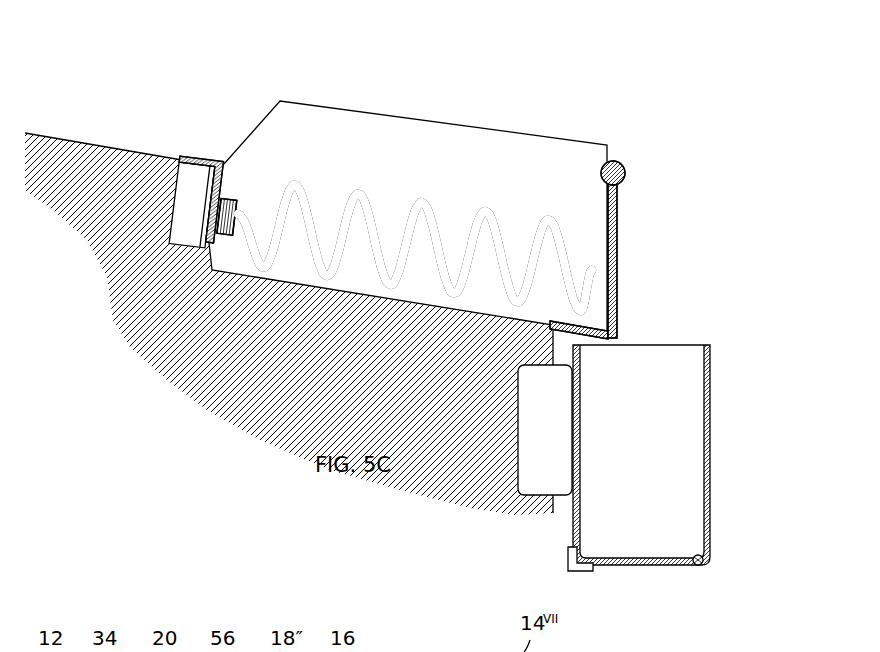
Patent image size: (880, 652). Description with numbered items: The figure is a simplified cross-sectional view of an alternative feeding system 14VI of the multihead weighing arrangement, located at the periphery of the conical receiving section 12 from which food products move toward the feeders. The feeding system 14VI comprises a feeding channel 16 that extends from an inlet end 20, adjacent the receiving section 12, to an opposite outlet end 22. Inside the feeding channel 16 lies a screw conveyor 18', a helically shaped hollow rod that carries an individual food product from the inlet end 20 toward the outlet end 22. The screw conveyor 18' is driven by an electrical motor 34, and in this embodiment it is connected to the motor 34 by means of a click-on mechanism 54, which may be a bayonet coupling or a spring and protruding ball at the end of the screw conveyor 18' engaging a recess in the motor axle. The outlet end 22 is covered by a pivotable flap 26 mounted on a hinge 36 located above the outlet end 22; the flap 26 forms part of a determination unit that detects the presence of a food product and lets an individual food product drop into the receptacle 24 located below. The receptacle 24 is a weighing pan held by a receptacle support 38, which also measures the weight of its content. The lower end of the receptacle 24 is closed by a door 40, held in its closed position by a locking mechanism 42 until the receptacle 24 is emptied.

The receiving section 12 is at (40, 120).
The feeding system 14VI is at (472, 98).
The electrical motor 34 is at (193, 203).
The inlet end 20 is at (234, 188).
The click-on mechanism 54 is at (242, 194).
The feeding channel 16 is at (322, 217).
The screw conveyor 18' is at (415, 165).
The outlet end 22 is at (590, 325).
The pivotable flap 26 is at (617, 227).
The hinge 36 is at (625, 174).
The receptacle 24 is at (724, 410).
The receptacle support 38 is at (553, 420).
The door 40 is at (647, 563).
The locking mechanism 42 is at (592, 568).